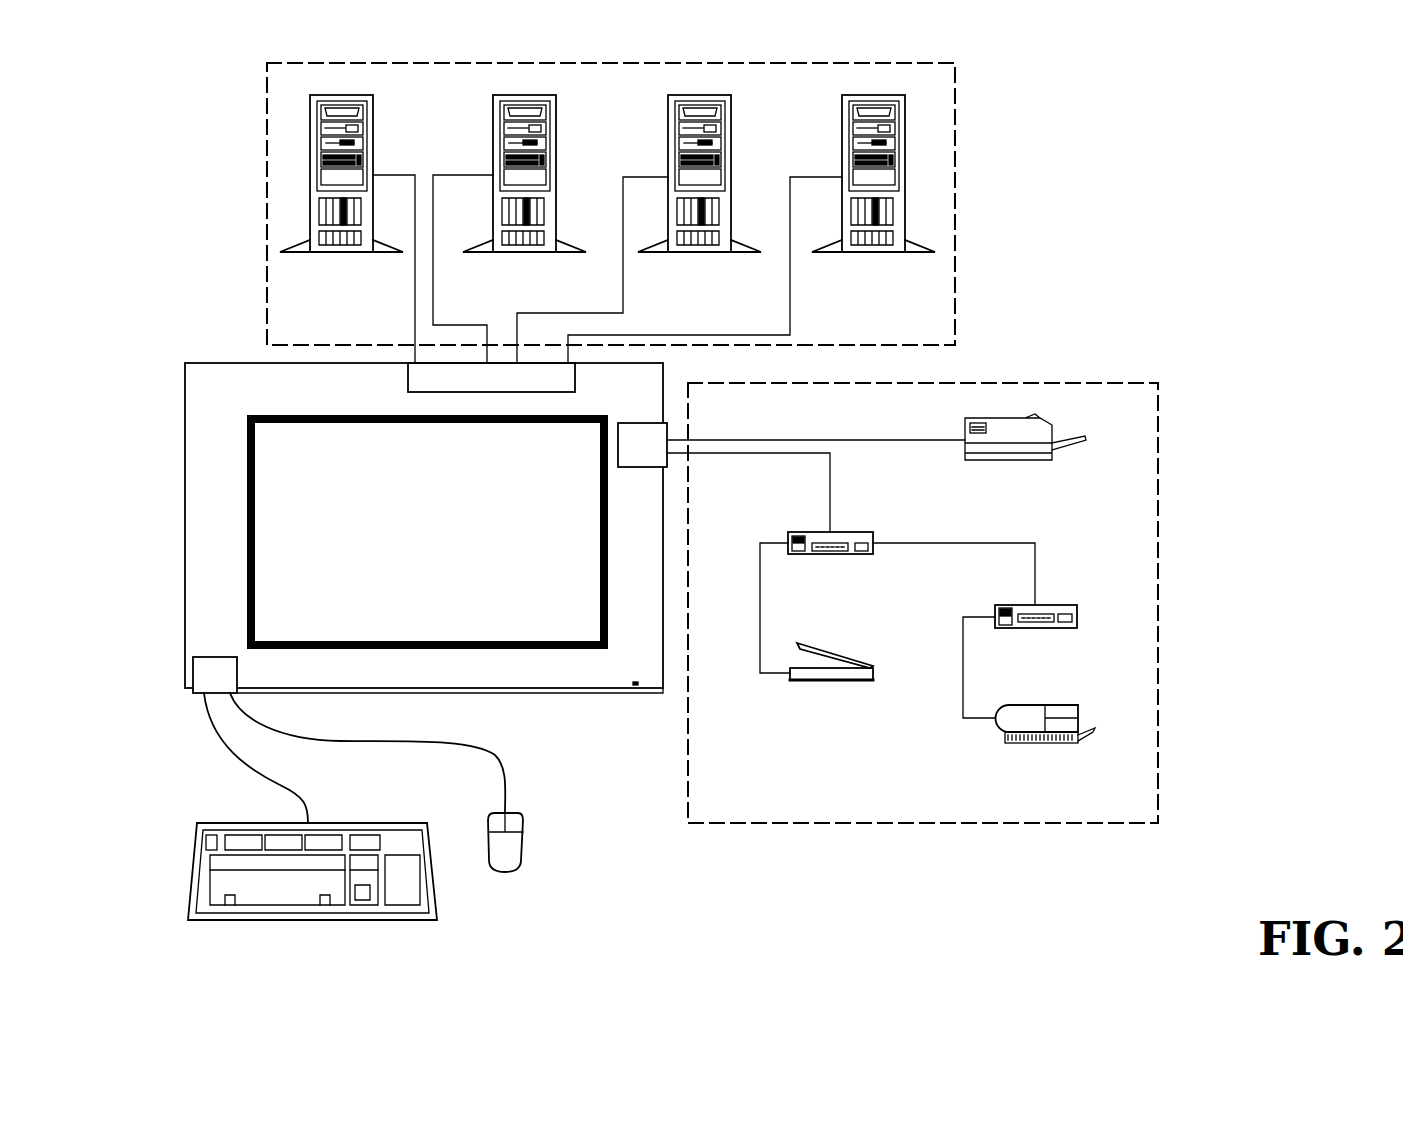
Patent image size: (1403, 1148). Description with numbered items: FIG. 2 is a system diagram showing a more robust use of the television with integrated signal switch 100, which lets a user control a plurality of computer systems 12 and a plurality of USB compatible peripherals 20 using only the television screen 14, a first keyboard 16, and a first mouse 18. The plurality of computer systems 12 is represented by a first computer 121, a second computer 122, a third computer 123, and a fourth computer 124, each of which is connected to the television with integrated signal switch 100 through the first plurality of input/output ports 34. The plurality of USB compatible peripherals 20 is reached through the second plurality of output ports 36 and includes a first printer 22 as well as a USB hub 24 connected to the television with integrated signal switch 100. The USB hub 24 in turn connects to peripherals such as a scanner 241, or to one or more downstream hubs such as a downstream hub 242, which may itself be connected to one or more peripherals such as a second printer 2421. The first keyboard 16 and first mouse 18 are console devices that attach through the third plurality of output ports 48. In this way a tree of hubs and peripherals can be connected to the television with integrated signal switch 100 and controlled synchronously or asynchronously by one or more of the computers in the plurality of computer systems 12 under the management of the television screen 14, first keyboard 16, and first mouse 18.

The plurality of computer systems 12 is at (628, 117).
The first computer 121 is at (362, 291).
The second computer 122 is at (547, 291).
The third computer 123 is at (719, 291).
The fourth computer 124 is at (892, 291).
The television with integrated signal switch 100 is at (250, 407).
The first plurality of input/output ports 34 is at (514, 390).
The television screen 14 is at (321, 614).
The second plurality of output ports 36 is at (657, 456).
The third plurality of output ports 48 is at (229, 687).
The first keyboard 16 is at (324, 957).
The first mouse 18 is at (519, 909).
The plurality of USB compatible peripherals 20 is at (767, 787).
The first printer 22 is at (1021, 499).
The USB hub 24 is at (846, 584).
The scanner 241 is at (854, 717).
The downstream hub 242 is at (1057, 659).
The second printer 2421 is at (1064, 777).